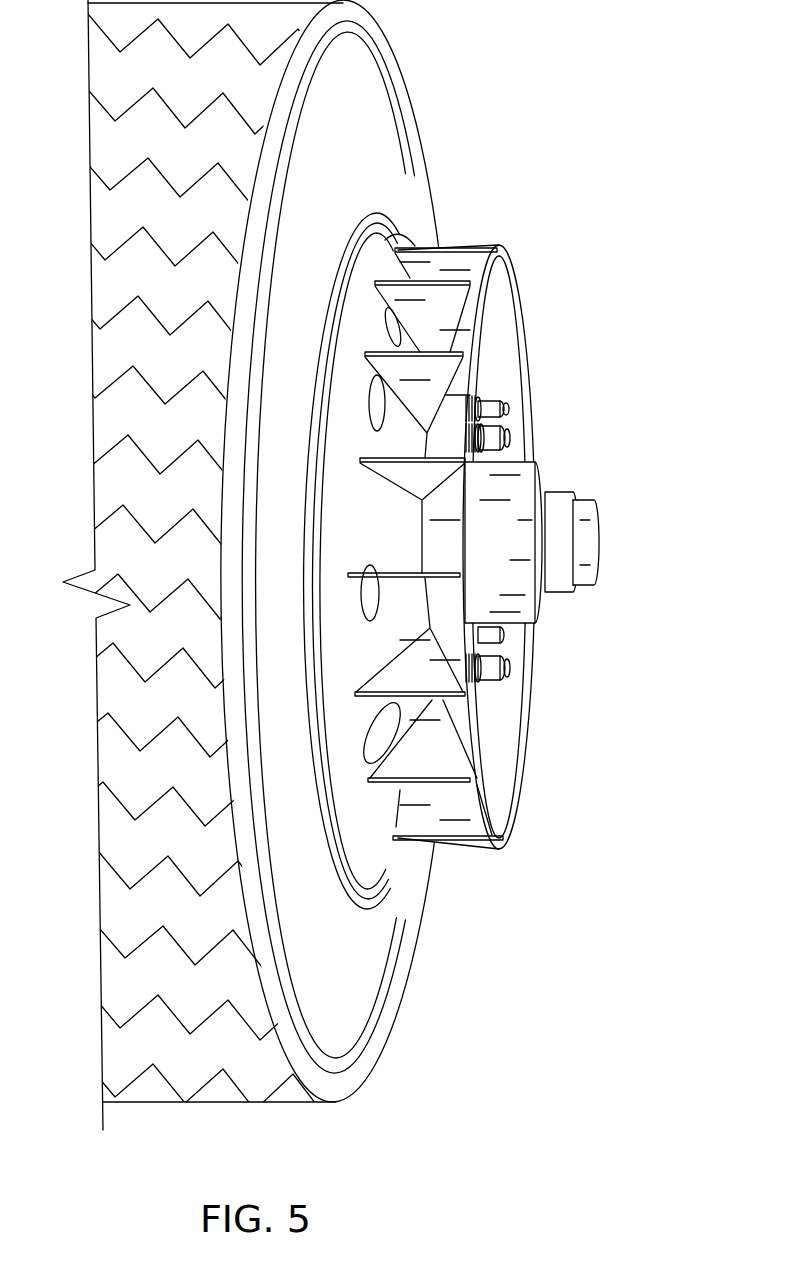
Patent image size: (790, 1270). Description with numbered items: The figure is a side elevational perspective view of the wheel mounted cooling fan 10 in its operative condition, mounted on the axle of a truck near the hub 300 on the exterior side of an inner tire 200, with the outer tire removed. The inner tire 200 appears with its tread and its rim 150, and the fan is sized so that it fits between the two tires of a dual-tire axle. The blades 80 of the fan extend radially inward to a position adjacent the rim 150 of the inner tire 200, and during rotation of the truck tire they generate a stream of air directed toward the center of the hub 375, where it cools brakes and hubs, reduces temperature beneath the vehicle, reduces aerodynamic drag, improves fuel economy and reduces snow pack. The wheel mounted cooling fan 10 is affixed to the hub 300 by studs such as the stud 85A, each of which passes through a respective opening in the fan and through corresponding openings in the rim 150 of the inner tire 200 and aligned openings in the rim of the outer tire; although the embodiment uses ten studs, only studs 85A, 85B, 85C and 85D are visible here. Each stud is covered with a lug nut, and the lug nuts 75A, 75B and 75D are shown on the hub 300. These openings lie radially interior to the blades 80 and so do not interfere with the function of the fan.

The inner tire 200 is at (480, 56).
The rim 150 is at (410, 240).
The wheel mounted cooling fan 10 is at (535, 773).
The blades 80 is at (438, 767).
The hub 375 is at (388, 516).
The hub 300 is at (598, 545).
The lug nut 75A is at (502, 404).
The lug nut 75B is at (508, 432).
The lug nut 75D is at (500, 660).
The stud 85A is at (478, 403).
The stud 85B is at (498, 421).
The stud 85C is at (500, 444).
The stud 85D is at (503, 679).